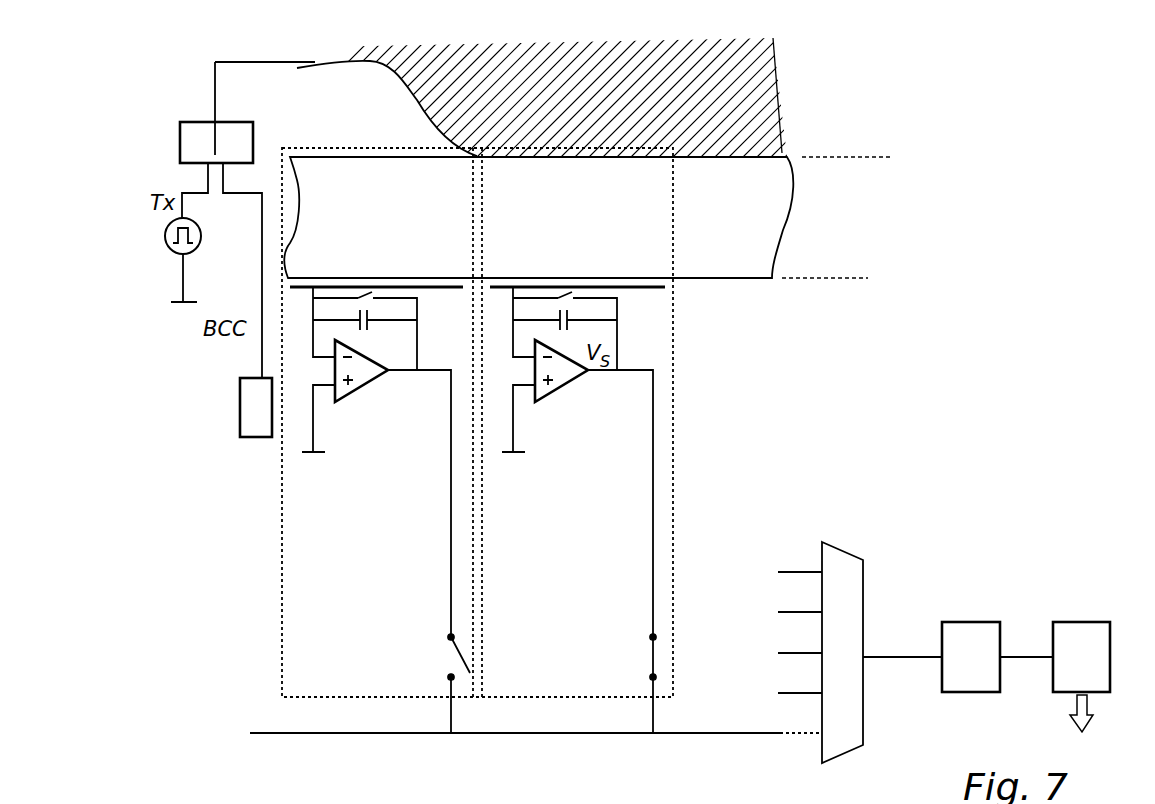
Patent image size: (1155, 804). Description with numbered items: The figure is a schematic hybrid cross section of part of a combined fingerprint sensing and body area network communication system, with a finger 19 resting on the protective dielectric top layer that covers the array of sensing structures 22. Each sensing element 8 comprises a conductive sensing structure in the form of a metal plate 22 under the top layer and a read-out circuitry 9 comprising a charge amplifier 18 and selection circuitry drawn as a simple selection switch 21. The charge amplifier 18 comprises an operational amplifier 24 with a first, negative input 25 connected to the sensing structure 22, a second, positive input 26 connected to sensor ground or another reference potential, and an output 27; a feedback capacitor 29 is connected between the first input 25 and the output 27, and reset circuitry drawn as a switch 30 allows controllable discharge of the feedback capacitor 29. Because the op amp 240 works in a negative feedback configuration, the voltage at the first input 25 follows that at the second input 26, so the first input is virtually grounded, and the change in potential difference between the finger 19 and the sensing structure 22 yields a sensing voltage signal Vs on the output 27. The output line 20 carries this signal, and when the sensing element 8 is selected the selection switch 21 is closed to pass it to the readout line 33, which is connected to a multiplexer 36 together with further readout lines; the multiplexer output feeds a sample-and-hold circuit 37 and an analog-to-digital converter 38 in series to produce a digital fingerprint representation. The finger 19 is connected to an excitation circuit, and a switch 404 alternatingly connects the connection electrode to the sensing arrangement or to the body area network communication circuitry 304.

The sensing element 8 is at (598, 708).
The read-out circuitry 9 is at (635, 485).
The charge amplifier 18 is at (557, 430).
The finger 19 is at (650, 94).
The output line 20 is at (622, 400).
The selection switch 21 is at (641, 648).
The sensing structure 22 is at (650, 282).
The operational amplifier 24 is at (600, 212).
The first input 25 is at (530, 367).
The second input 26 is at (530, 390).
The output 27 is at (560, 420).
The feedback capacitor 29 is at (580, 310).
The reset circuitry 30 is at (558, 296).
The readout line 33 is at (542, 735).
The multiplexer 36 is at (845, 547).
The sample-and-hold circuit 37 is at (968, 622).
The analog-to-digital converter 38 is at (1082, 622).
The op amp 240 is at (558, 353).
The body area network communication circuitry 304 is at (240, 410).
The switch 404 is at (180, 147).